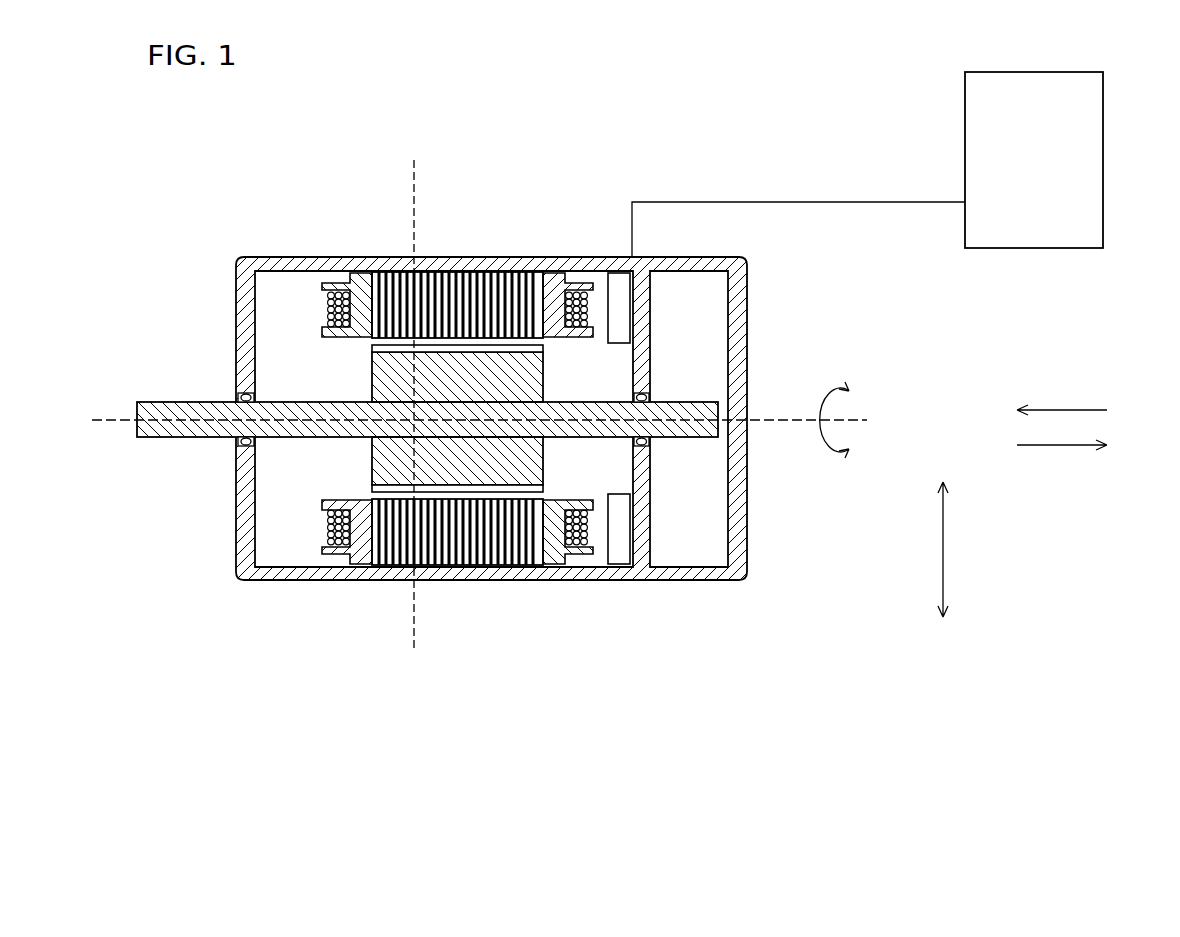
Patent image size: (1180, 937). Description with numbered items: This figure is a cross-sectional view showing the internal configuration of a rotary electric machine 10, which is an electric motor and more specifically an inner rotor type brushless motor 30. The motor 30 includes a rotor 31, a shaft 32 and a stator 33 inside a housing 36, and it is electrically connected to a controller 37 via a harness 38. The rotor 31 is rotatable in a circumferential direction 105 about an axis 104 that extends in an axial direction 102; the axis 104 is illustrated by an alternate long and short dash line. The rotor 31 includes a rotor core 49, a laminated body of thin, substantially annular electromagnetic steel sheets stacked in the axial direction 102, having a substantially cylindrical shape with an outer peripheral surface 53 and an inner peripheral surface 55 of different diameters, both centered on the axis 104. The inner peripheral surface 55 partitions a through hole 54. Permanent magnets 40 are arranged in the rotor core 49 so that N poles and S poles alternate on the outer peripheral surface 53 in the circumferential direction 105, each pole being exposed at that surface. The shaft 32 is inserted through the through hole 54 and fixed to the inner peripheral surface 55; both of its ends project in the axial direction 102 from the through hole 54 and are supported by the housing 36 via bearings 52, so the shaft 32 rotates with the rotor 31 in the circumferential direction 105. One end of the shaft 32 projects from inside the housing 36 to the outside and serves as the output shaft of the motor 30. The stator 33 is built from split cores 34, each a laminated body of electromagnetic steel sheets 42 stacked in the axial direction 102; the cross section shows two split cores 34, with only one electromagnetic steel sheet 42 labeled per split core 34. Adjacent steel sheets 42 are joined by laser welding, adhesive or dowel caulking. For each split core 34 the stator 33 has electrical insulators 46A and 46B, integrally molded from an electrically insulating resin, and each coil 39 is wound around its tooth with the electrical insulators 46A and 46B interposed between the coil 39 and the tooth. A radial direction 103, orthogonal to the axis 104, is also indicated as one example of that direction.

The rotary electric machine 10 is at (238, 208).
The motor 30 is at (479, 356).
The rotor 31 is at (606, 406).
The shaft 32 is at (152, 402).
The stator 33 is at (471, 347).
The split core 34 is at (511, 258).
The housing 36 is at (633, 580).
The controller 37 is at (1103, 130).
The harness 38 is at (830, 200).
The coil 39 is at (331, 290).
The magnet 40 is at (545, 348).
The electromagnetic steel sheet 42 is at (380, 275).
The electrical insulator 46A is at (352, 284).
The electrical insulator 46B is at (590, 288).
The rotor core 49 is at (545, 368).
The bearing 52 is at (238, 442).
The outer peripheral surface 53 is at (442, 347).
The through hole 54 is at (357, 413).
The inner peripheral surface 55 is at (488, 410).
The axial direction 102 is at (1065, 410).
The radial direction 103 is at (944, 545).
The axis 104 is at (858, 412).
The circumferential direction 105 is at (843, 392).